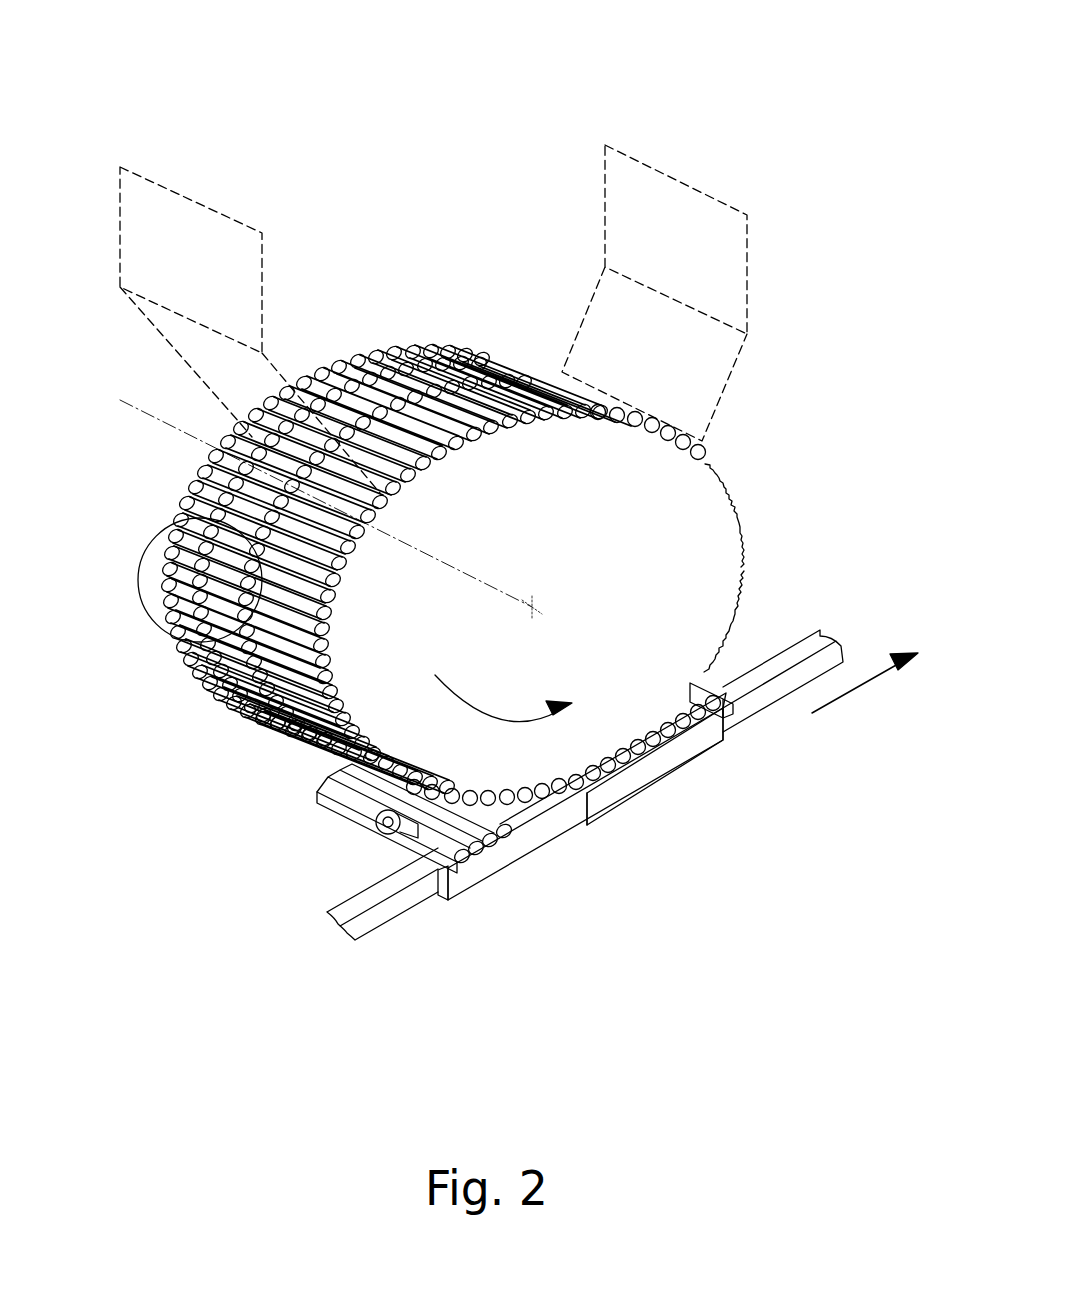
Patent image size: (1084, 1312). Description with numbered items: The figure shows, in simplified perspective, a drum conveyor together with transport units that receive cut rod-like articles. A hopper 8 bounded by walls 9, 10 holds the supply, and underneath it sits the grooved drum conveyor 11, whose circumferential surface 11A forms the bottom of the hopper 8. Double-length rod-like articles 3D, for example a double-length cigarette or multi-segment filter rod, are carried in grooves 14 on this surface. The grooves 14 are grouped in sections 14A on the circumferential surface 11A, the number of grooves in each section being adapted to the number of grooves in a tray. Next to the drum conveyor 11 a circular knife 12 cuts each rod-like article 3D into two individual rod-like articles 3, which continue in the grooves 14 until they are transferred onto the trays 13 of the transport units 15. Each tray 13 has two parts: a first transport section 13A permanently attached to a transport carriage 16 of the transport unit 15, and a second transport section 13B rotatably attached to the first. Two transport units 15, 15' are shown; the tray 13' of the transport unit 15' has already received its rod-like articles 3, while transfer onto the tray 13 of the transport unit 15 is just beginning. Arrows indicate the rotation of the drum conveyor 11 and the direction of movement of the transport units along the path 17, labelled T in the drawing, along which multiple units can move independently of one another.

The rod-like article 3 is at (233, 710).
The rod-like article of double length 3D is at (380, 493).
The hopper 8 is at (497, 240).
The wall 9 is at (187, 238).
The wall 10 is at (697, 253).
The drum conveyor 11 is at (516, 692).
The circumferential surface 11A is at (765, 560).
The circular knife 12 is at (157, 612).
The tray 13 is at (303, 866).
The first transport section 13A is at (410, 843).
The second transport section 13B is at (333, 810).
The tray 13' is at (787, 641).
The groove 14 is at (707, 463).
The section 14A is at (748, 487).
The transport unit 15 is at (641, 810).
The transport unit 15' is at (711, 778).
The transport carriage 16 is at (467, 880).
The path 17 is at (760, 690).
The translation direction T is at (857, 693).